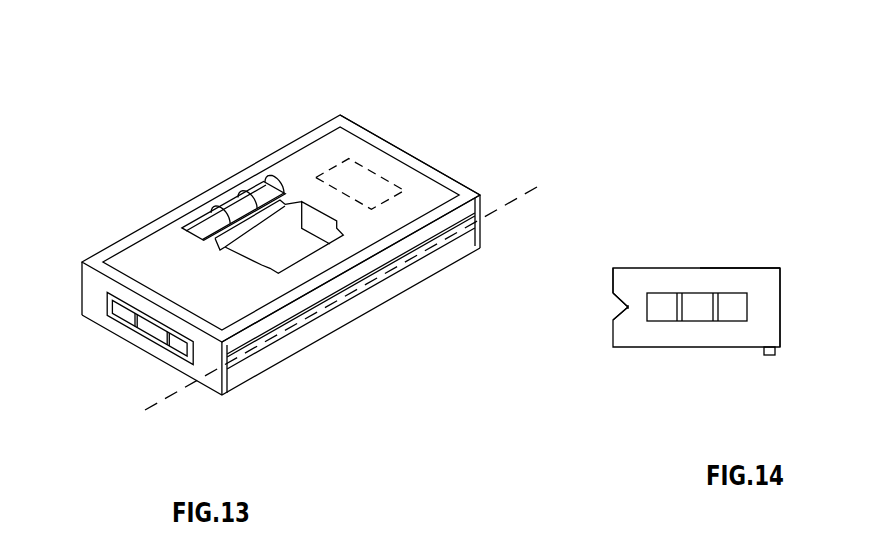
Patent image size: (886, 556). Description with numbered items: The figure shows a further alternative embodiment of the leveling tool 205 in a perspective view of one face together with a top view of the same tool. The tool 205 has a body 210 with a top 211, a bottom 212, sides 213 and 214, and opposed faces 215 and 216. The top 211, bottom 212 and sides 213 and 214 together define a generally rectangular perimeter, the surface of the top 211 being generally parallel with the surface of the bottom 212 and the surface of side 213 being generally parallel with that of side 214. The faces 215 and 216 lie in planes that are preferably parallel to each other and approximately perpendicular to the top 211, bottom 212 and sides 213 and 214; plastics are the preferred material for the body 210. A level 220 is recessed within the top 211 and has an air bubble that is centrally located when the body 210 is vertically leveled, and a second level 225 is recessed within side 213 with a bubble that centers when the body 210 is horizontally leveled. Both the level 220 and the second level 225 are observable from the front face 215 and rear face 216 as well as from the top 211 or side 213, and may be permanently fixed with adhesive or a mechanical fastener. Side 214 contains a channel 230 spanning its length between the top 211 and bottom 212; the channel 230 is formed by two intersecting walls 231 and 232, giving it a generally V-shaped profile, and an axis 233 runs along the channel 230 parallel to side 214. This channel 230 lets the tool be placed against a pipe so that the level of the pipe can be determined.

In FIG. 13, the tool 205 is at (449, 87).
In FIG. 14, the tool 205 is at (705, 187).
In FIG. 13, the body 210 is at (257, 163).
In FIG. 13, the top 211 is at (92, 313).
In FIG. 14, the top 211 is at (762, 275).
In FIG. 13, the bottom 212 is at (418, 160).
In FIG. 13, the side 213 is at (165, 208).
In FIG. 14, the side 213 is at (782, 288).
In FIG. 13, the side 214 is at (342, 330).
In FIG. 14, the side 214 is at (613, 272).
In FIG. 14, the face 215 is at (720, 348).
In FIG. 13, the face 216 is at (338, 147).
In FIG. 14, the face 216 is at (713, 267).
In FIG. 13, the level 220 is at (152, 325).
In FIG. 14, the level 220 is at (697, 308).
In FIG. 13, the second level 225 is at (235, 212).
In FIG. 13, the channel 230 is at (440, 252).
In FIG. 14, the channel 230 is at (627, 307).
In FIG. 14, the wall 231 is at (614, 294).
In FIG. 14, the wall 232 is at (613, 320).
In FIG. 13, the axis 233 is at (505, 210).